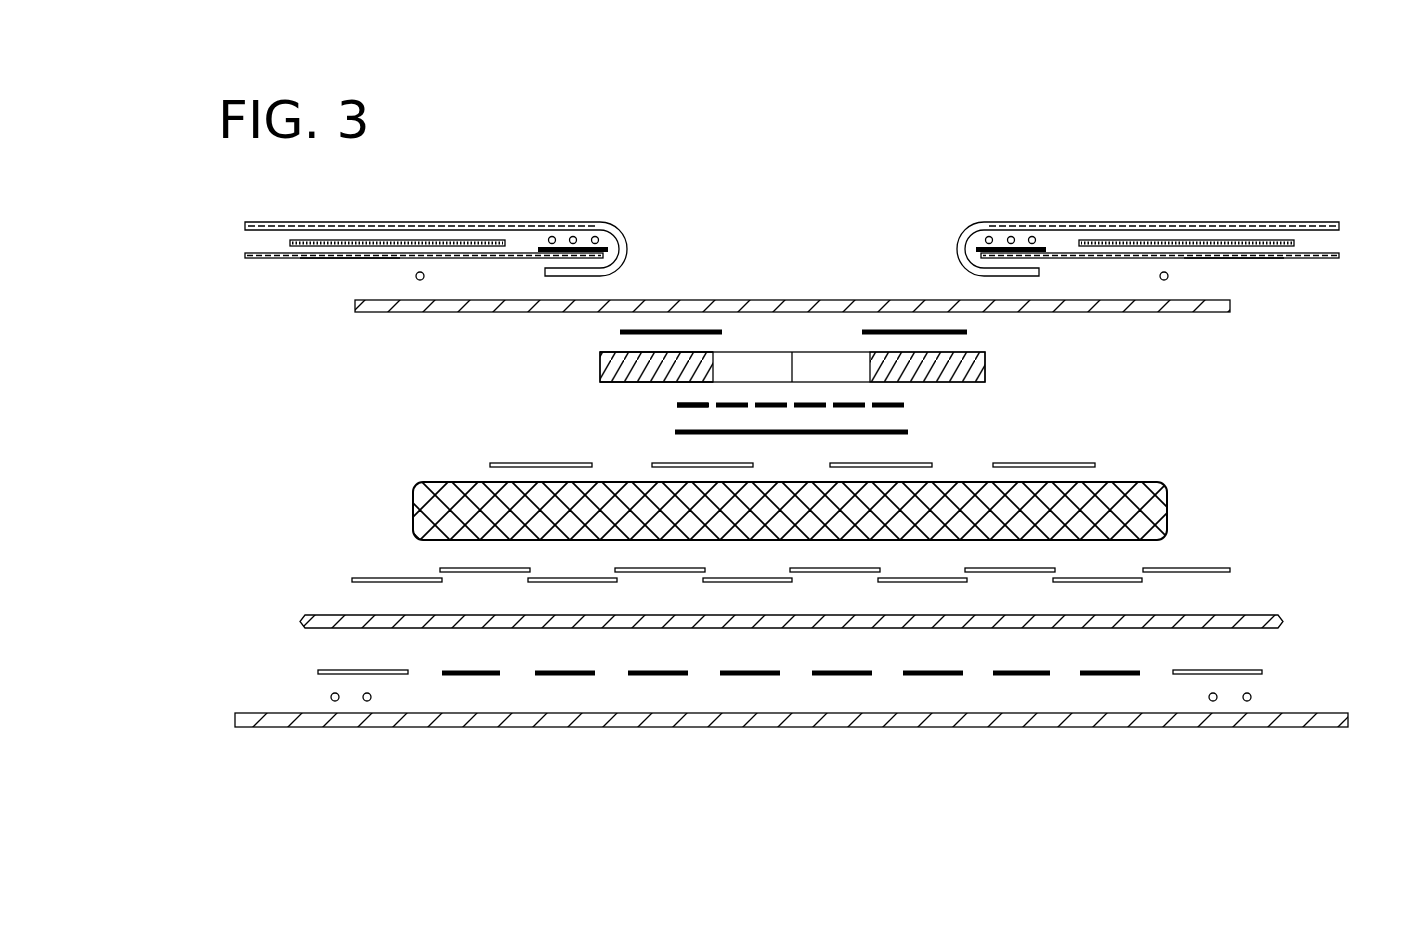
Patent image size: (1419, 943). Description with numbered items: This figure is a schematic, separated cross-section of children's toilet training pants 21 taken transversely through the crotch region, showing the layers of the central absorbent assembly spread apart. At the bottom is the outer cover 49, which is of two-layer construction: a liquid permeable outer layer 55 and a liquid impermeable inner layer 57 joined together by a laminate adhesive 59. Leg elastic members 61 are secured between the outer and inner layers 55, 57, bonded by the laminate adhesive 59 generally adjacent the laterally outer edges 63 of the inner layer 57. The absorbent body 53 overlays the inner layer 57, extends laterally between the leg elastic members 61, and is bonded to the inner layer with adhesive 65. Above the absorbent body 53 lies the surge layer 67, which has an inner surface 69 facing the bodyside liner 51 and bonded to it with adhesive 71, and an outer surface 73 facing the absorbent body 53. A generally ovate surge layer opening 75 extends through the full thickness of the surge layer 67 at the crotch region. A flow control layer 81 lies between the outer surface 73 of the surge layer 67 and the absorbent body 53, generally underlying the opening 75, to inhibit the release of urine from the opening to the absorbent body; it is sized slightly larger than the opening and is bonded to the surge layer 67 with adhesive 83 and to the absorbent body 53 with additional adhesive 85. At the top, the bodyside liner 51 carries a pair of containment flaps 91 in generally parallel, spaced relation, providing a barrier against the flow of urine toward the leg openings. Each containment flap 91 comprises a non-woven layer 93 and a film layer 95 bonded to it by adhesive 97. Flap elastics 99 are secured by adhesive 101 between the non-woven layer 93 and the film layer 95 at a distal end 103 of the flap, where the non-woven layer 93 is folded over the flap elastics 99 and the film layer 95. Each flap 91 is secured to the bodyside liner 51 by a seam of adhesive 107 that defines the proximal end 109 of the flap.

The training pants 21 is at (818, 183).
The outer cover 49 is at (1023, 731).
The bodyside liner 51 is at (770, 300).
The absorbent body 53 is at (1167, 510).
The outer layer 55 is at (880, 728).
The inner layer 57 is at (378, 630).
The laminate adhesive 59 is at (718, 678).
The leg elastic members 61 is at (365, 693).
The laterally outer edges 63 is at (300, 622).
The adhesive 65 is at (1205, 568).
The surge layer 67 is at (985, 362).
The inner surface 69 is at (613, 352).
The adhesive 71 is at (676, 329).
The outer surface 73 is at (612, 382).
The surge layer opening 75 is at (862, 378).
The flow control layer 81 is at (890, 436).
The adhesive 83 is at (684, 407).
The adhesive 85 is at (1075, 463).
The containment flaps 91 is at (210, 180).
The non-woven layer 93 is at (383, 222).
The film layer 95 is at (263, 260).
The adhesive 97 is at (310, 240).
The flap elastics 99 is at (552, 236).
The adhesive 101 is at (540, 248).
The distal end 103 is at (614, 247).
The seam of adhesive 107 is at (424, 278).
The proximal end 109 is at (335, 260).